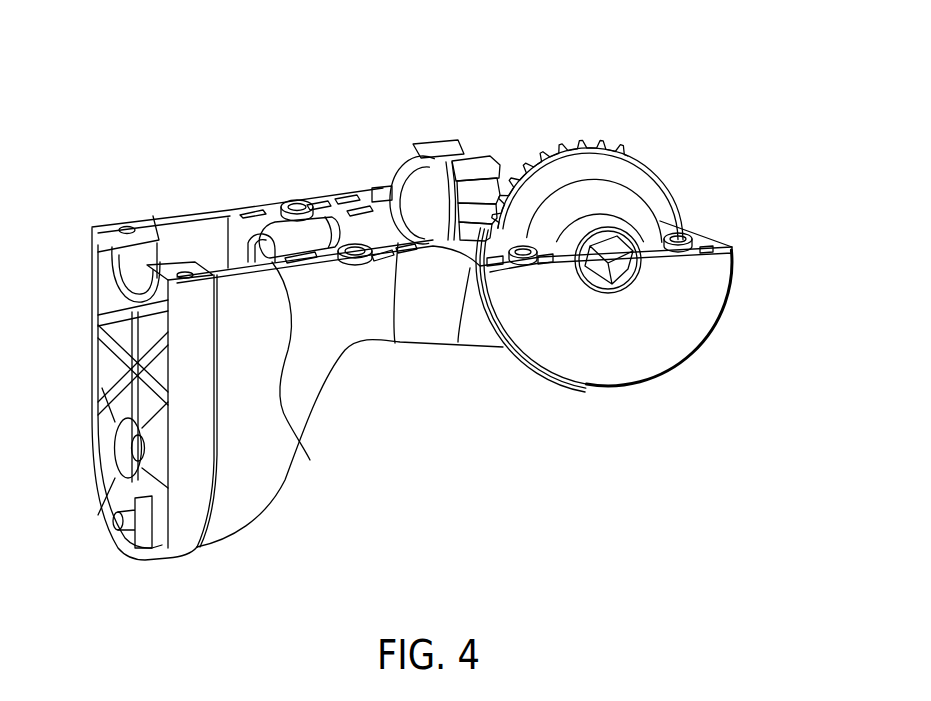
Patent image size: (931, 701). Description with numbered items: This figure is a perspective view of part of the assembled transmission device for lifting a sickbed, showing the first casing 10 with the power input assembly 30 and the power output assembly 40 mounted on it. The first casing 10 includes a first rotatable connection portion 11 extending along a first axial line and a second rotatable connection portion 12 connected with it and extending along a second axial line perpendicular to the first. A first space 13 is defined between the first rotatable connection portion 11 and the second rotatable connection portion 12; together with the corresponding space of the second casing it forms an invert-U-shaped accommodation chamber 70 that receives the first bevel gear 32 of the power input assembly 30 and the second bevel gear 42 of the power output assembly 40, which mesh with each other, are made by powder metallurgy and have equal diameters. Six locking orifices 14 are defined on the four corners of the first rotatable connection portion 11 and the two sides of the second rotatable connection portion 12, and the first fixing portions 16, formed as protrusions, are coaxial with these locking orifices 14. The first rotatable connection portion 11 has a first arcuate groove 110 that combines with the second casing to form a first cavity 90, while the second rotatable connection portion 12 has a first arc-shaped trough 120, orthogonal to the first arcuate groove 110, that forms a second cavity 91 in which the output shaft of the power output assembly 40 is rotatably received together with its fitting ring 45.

The first casing 10 is at (557, 386).
The first rotatable connection portion 11 is at (607, 370).
The second rotatable connection portion 12 is at (363, 330).
The first space 13 is at (458, 348).
The accommodation chamber 70 is at (455, 300).
The locking orifices 14 is at (677, 235).
The first fixing portions 16 is at (684, 256).
The power input assembly 30 is at (587, 121).
The first bevel gear 32 is at (515, 147).
The power output assembly 40 is at (418, 127).
The second bevel gear 42 is at (397, 167).
The fitting ring 45 is at (296, 232).
The first arcuate groove 110 is at (654, 330).
The first cavity 90 is at (637, 287).
The first arc-shaped trough 120 is at (350, 443).
The second cavity 91 is at (350, 443).